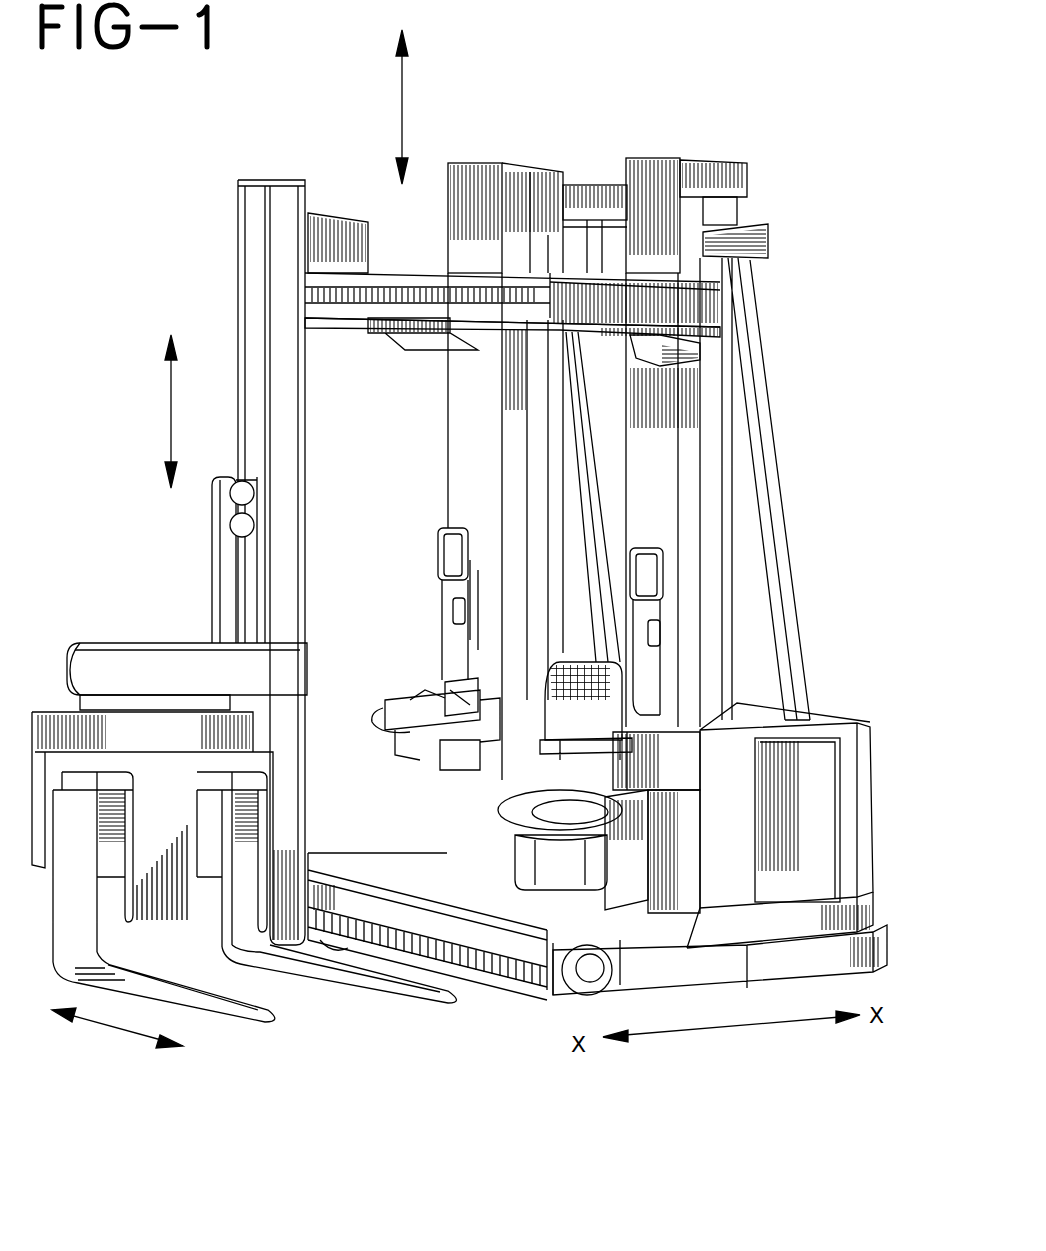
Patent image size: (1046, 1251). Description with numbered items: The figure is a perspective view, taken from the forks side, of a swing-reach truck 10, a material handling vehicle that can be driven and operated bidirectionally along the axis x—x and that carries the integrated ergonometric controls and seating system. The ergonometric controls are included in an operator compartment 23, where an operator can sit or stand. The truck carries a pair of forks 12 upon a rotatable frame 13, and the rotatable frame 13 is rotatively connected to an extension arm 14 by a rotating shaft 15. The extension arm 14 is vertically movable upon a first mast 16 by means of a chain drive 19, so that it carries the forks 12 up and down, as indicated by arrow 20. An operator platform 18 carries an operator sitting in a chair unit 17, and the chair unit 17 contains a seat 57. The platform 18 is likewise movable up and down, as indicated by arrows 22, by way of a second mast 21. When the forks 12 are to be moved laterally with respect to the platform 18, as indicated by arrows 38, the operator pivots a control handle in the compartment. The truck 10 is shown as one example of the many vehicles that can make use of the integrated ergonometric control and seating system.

The swing-reach truck 10 is at (797, 208).
The forks 12 is at (232, 1022).
The rotatable frame 13 is at (30, 712).
The extension arm 14 is at (158, 643).
The rotating shaft 15 is at (80, 643).
The first mast 16 is at (238, 255).
The chair unit 17 is at (560, 690).
The operator platform 18 is at (390, 858).
The chain drive 19 is at (212, 522).
The arrow 20 is at (168, 407).
The second mast 21 is at (447, 250).
The arrows 22 is at (420, 105).
The operator compartment 23 is at (388, 556).
The arrows 38 is at (105, 1022).
The seat 57 is at (512, 797).